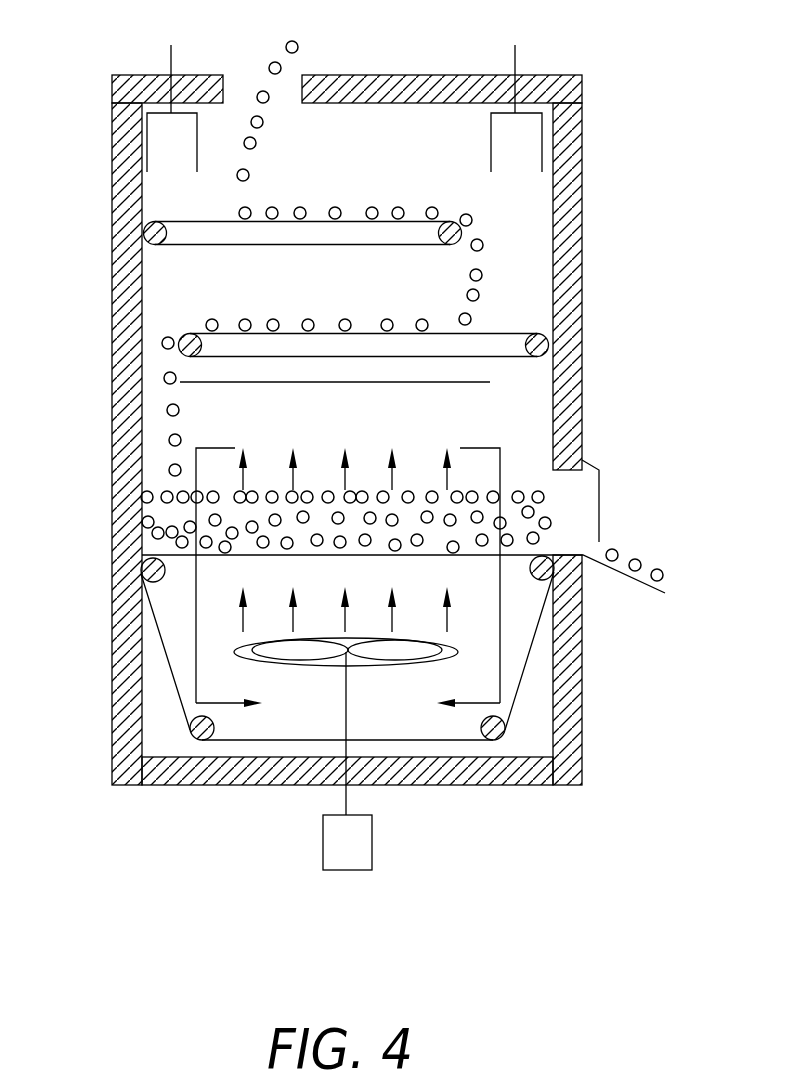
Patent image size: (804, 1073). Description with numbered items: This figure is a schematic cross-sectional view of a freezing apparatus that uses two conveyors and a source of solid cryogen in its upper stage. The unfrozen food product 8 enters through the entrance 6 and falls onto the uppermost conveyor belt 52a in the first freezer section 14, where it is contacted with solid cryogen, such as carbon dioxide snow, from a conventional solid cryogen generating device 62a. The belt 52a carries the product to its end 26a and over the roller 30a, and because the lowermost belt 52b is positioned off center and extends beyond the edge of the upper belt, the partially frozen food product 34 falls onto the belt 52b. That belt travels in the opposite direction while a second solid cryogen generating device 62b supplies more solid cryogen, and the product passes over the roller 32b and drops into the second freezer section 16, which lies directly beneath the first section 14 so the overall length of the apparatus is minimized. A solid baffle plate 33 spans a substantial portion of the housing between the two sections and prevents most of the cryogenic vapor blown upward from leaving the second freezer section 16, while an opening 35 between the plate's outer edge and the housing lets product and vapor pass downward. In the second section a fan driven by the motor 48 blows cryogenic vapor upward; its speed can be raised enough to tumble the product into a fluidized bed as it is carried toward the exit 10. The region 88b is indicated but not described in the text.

The entrance 6 is at (235, 88).
The unfrozen food product 8 is at (297, 44).
The exit 10 is at (613, 513).
The first freezer section 14 is at (172, 277).
The second freezer section 16 is at (183, 641).
The end of conveyor belt 26a is at (418, 220).
The roller 30a is at (450, 247).
The roller 32b is at (188, 336).
The solid baffle plate 33 is at (328, 387).
The partially frozen food product 34 is at (481, 273).
The opening 35 is at (153, 408).
The motor 48 is at (361, 858).
The conveyor belt 52a is at (344, 247).
The conveyor belt 52b is at (470, 358).
The solid cryogen generating device 62a is at (190, 155).
The solid cryogen generating device 62b is at (534, 155).
The transfer region 88b is at (250, 300).